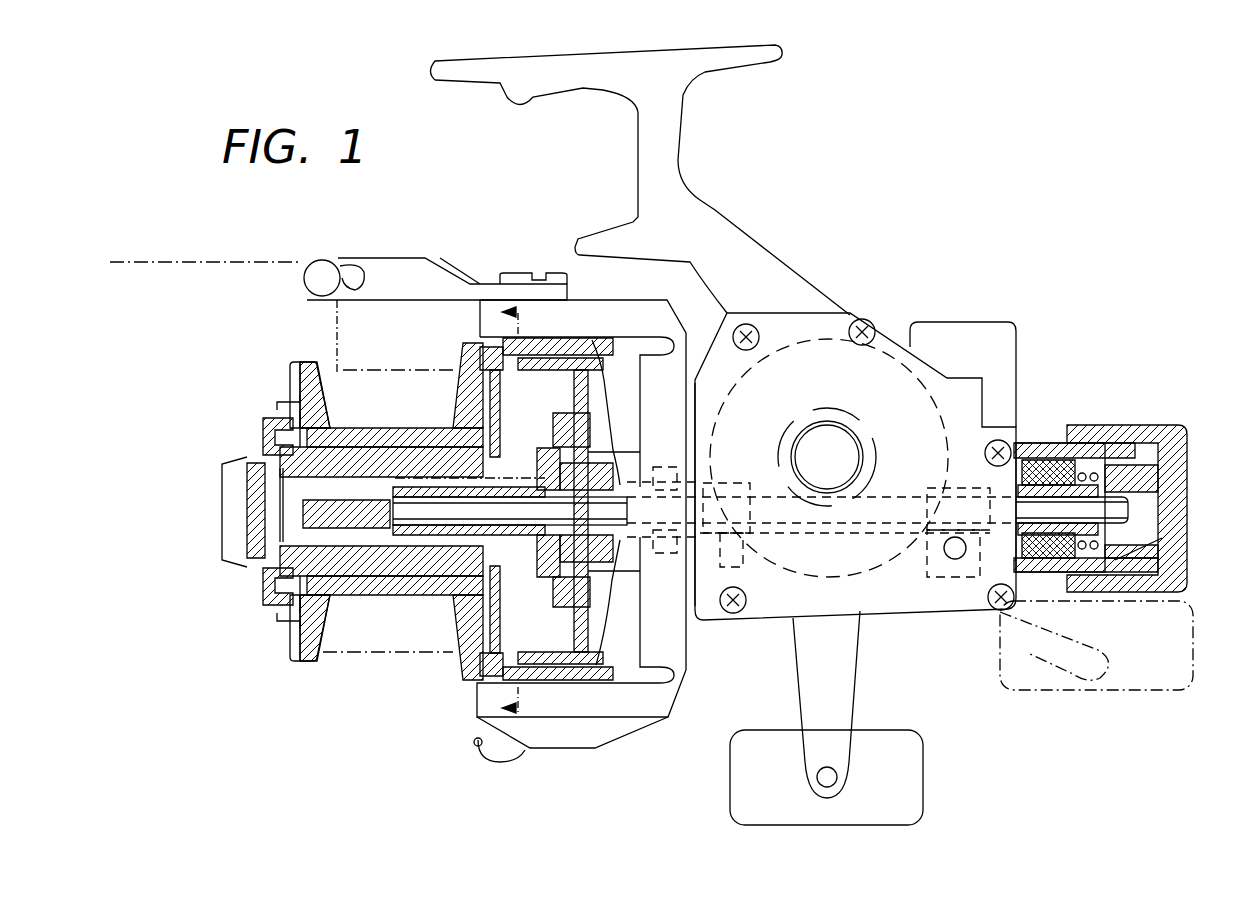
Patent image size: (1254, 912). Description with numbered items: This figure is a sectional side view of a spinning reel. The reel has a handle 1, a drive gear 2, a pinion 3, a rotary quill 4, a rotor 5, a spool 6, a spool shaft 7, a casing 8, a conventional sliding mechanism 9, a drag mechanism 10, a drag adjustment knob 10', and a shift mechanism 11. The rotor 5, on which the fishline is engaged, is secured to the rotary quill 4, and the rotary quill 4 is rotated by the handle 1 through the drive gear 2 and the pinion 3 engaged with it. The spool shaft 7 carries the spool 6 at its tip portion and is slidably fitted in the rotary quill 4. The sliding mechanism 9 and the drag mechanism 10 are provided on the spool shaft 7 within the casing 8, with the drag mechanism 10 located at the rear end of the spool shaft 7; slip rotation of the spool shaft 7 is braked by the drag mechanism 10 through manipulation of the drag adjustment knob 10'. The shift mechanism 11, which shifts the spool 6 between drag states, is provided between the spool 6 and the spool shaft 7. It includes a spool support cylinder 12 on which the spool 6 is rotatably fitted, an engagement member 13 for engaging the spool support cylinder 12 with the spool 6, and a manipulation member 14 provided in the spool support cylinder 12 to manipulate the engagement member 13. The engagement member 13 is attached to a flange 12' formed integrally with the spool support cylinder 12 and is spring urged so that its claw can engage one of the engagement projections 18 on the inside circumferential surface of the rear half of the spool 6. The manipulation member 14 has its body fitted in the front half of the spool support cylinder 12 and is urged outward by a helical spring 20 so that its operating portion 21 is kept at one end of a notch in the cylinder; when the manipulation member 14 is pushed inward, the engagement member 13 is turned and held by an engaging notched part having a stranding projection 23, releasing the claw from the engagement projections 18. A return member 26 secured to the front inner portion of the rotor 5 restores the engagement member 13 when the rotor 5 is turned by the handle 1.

The handle 1 is at (857, 683).
The drive gear 2 is at (880, 360).
The pinion 3 is at (713, 585).
The rotary quill 4 is at (590, 530).
The rotor 5 is at (597, 672).
The spool 6 is at (347, 592).
The spool shaft 7 is at (513, 519).
The casing 8 is at (827, 330).
The sliding mechanism 9 is at (903, 565).
The drag mechanism 10 is at (1088, 478).
The drag adjustment knob 10' is at (1127, 477).
The shift mechanism 11 is at (393, 566).
The spool support cylinder 12 is at (395, 394).
The flange 12' is at (558, 506).
The engagement member 13 is at (500, 408).
The manipulation member 14 is at (330, 442).
The engagement projections 18 is at (483, 355).
The helical spring 20 is at (300, 535).
The operating portion 21 is at (422, 466).
The stranding projection 23 is at (593, 468).
The return member 26 is at (430, 534).